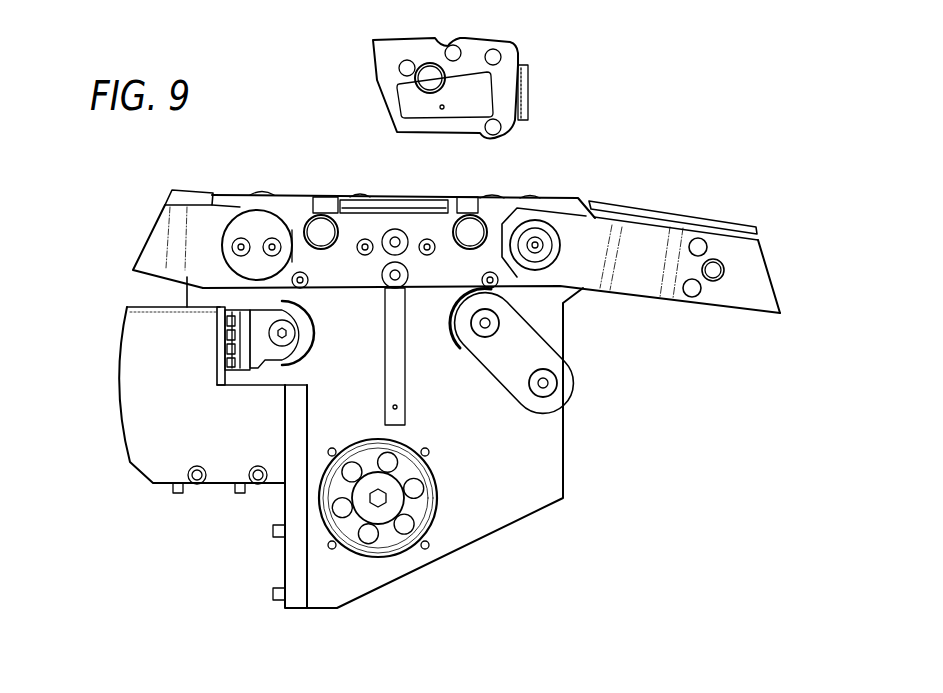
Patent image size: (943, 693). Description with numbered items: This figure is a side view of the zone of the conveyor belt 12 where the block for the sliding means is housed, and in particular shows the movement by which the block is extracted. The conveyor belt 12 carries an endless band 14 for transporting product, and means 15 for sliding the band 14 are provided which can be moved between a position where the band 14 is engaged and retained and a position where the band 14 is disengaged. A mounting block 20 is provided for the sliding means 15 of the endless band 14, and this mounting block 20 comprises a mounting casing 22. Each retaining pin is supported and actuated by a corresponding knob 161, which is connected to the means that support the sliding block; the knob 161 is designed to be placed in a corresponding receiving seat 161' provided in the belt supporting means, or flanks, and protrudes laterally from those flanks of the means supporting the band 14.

The conveyor belt 12 is at (675, 205).
The band 14 is at (736, 225).
The sliding means 15 is at (552, 75).
The mounting block 20 is at (531, 131).
The mounting casing 22 is at (380, 98).
The knob 161 is at (562, 325).
The receiving seat 161' is at (407, 191).